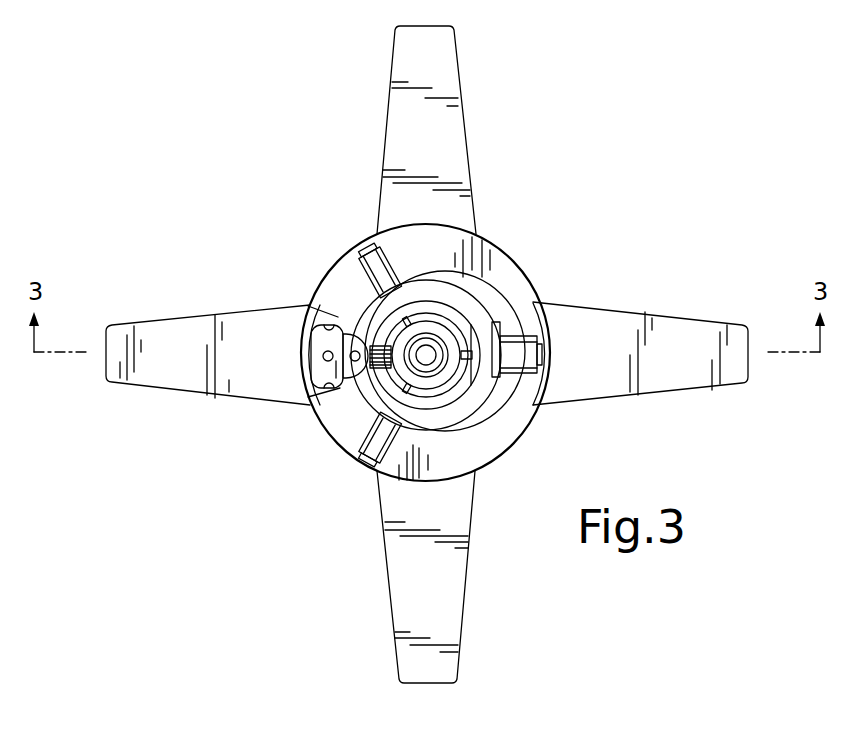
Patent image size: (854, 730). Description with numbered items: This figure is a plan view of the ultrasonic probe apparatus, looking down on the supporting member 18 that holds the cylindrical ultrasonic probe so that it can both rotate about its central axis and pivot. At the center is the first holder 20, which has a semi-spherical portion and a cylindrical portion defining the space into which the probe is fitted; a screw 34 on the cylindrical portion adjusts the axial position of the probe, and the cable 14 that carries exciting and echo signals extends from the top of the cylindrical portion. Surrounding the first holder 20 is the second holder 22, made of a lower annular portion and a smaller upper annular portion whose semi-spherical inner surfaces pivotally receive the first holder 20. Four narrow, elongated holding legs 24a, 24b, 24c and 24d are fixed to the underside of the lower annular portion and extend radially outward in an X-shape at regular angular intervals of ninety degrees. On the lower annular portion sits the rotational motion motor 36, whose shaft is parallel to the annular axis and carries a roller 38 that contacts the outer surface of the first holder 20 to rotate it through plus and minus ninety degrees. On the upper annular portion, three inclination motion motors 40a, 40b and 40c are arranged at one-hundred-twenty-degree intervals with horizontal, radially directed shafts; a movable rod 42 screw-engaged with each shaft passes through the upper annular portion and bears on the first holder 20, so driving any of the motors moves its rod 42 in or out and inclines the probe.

The cable 14 is at (427, 360).
The supporting member 18 is at (296, 289).
The first holder 20 is at (467, 395).
The second holder 22 is at (473, 309).
The holding leg 24a is at (688, 360).
The holding leg 24b is at (428, 68).
The holding leg 24c is at (162, 350).
The holding leg 24d is at (425, 612).
The screw 34 is at (347, 312).
The rotational motion motor 36 is at (310, 356).
The roller 38 is at (340, 412).
The inclination motion motor 40a is at (545, 320).
The inclination motion motor 40b is at (367, 292).
The inclination motion motor 40c is at (352, 440).
The movable rod 42 is at (455, 388).